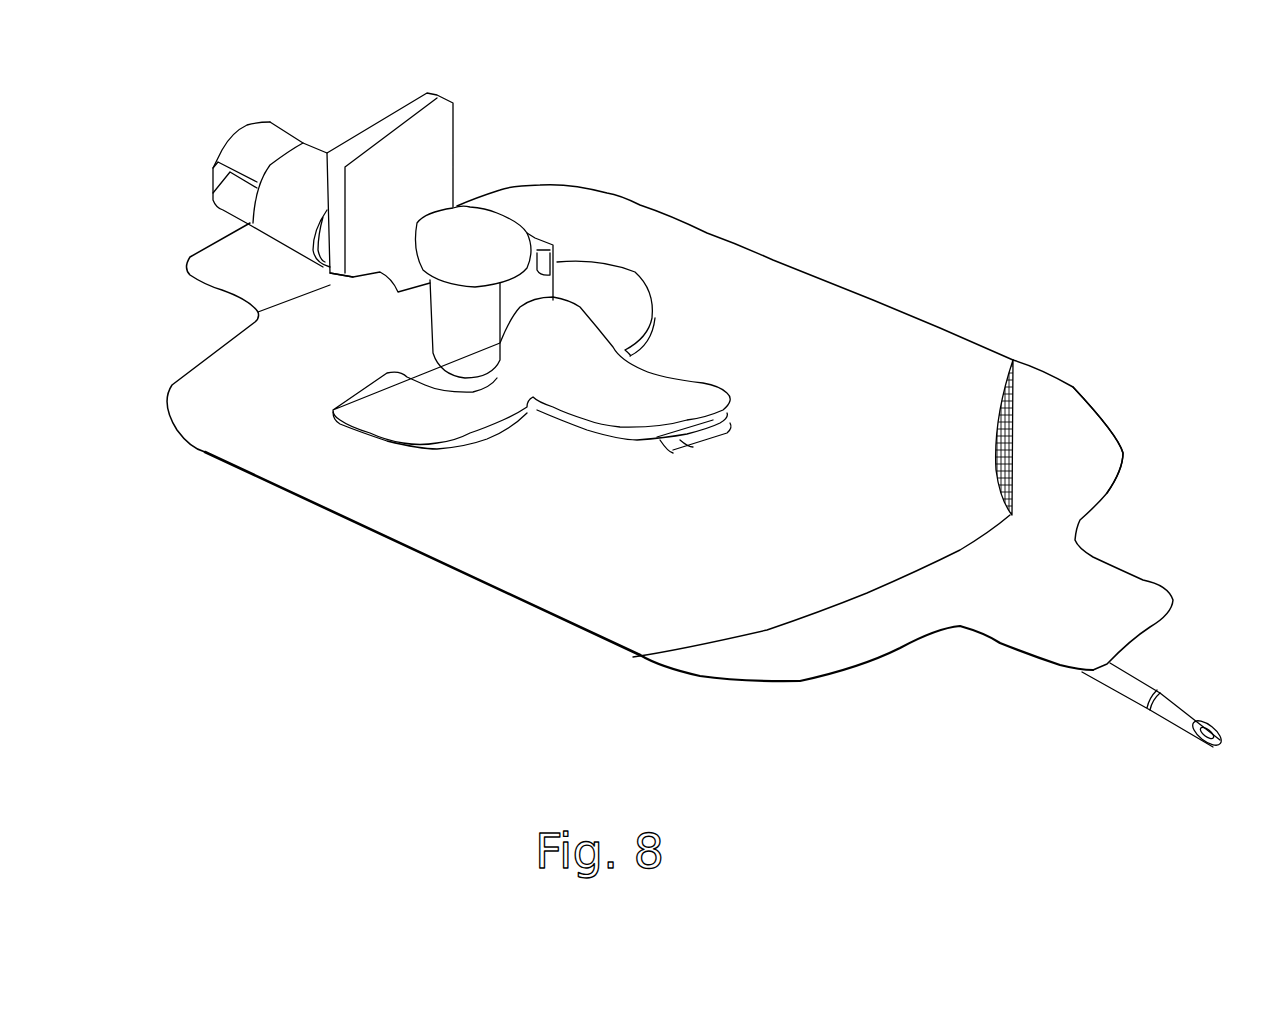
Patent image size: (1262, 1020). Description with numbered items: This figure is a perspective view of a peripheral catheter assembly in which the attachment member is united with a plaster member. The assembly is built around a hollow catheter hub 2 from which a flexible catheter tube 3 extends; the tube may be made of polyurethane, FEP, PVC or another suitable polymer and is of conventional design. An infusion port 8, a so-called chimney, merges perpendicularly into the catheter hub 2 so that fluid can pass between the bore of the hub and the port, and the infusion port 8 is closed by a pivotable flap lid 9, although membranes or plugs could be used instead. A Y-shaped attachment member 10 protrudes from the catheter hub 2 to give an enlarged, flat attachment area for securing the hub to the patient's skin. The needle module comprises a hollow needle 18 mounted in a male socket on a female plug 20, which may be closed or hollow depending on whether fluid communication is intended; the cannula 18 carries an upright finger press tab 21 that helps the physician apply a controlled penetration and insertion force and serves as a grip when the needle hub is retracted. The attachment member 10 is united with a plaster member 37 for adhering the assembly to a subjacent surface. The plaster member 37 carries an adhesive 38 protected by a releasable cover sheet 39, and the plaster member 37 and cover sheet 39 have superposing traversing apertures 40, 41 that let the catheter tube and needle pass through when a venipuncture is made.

The hollow catheter hub 2 is at (417, 297).
The flexible catheter tube 3 is at (1110, 678).
The infusion port 8 is at (543, 283).
The pivotable flap lid 9 is at (472, 230).
The Y-shaped attachment member 10 is at (440, 417).
The hollow needle 18 is at (1170, 718).
The female plug 20 is at (307, 160).
The upright finger press tab 21 is at (418, 162).
The plaster member 37 is at (920, 380).
The adhesive 38 is at (1013, 393).
The releasable cover sheet 39 is at (1087, 490).
The traversing aperture 40 is at (718, 415).
The traversing aperture 41 is at (675, 450).